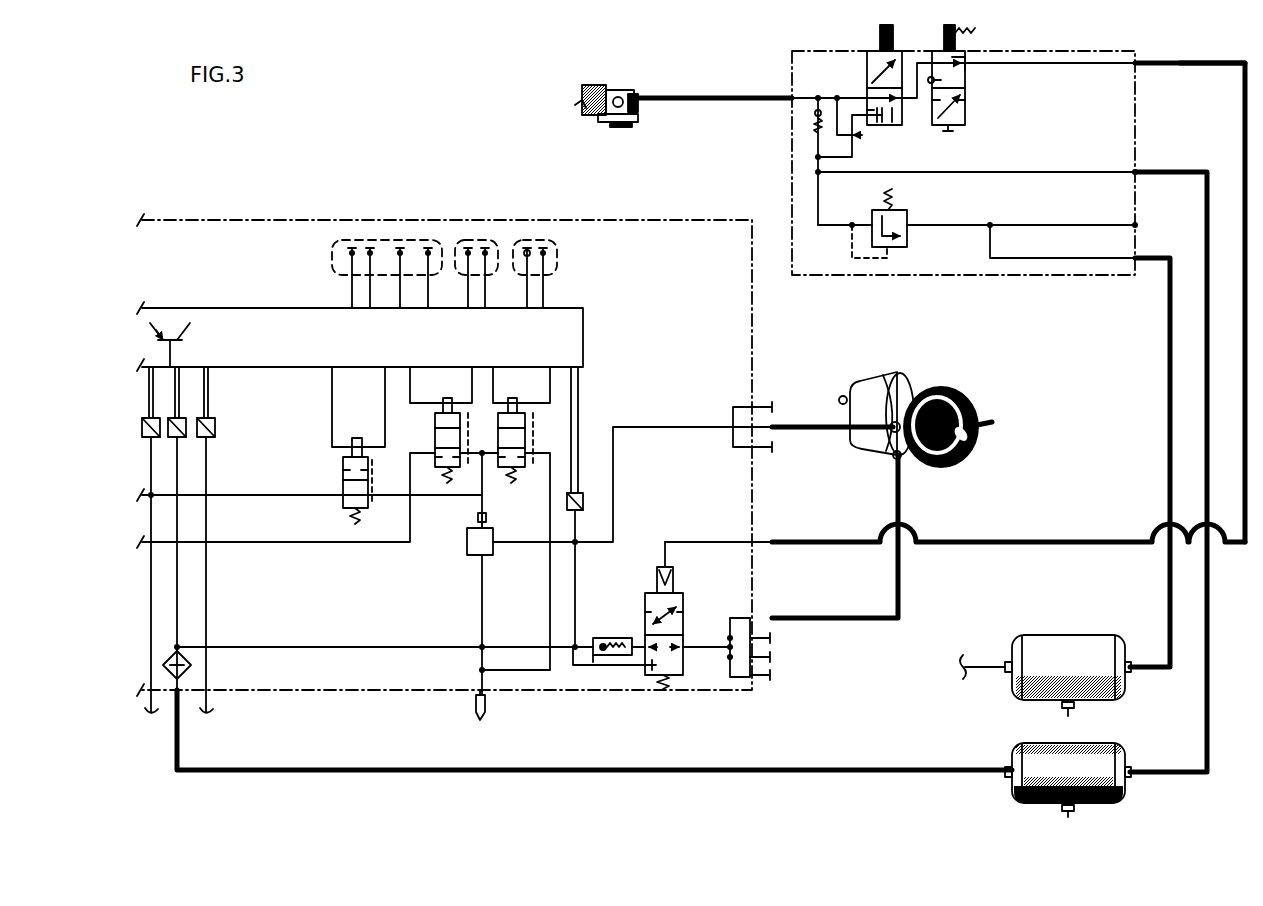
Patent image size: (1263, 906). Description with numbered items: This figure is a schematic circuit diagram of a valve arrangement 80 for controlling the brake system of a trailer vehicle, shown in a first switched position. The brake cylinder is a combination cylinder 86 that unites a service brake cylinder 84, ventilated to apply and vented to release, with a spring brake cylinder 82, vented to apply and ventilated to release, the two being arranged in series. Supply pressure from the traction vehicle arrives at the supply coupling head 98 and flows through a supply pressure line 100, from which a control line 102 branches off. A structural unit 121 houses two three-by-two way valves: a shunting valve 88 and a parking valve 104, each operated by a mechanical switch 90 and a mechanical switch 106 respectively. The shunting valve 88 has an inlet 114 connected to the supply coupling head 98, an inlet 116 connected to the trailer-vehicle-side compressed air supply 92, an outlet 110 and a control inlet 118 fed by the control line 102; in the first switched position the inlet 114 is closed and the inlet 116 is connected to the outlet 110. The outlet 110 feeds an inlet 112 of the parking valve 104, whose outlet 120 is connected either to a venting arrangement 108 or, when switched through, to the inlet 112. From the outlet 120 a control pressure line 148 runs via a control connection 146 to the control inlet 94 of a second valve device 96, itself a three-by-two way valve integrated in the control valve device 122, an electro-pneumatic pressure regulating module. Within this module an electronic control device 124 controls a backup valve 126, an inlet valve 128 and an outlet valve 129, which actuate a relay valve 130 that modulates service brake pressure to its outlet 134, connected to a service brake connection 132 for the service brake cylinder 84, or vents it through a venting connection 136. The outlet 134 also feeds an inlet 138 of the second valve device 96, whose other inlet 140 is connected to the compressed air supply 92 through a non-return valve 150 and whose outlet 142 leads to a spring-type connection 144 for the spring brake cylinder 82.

The valve arrangement 80 is at (1172, 55).
The spring brake cylinder 82 is at (884, 382).
The service brake cylinder 84 is at (977, 419).
The combination cylinder 86 is at (944, 378).
The shunting valve 88 is at (898, 201).
The mechanical switch 90 is at (882, 50).
The trailer-vehicle-side compressed air supply 92 is at (1035, 760).
The control inlet 94 is at (667, 566).
The second valve device 96 is at (635, 619).
The supply coupling head 98 is at (574, 96).
The supply pressure line 100 is at (755, 97).
The control line 102 is at (867, 113).
The parking valve 104 is at (952, 131).
The mechanical switch 106 is at (967, 30).
The venting arrangement 108 is at (930, 84).
The outlet 110 is at (890, 126).
The inlet 112 is at (940, 66).
The inlet 114 is at (867, 118).
The inlet 116 is at (867, 105).
The control inlet 118 is at (884, 126).
The outlet 120 is at (966, 68).
The structural unit 121 is at (1105, 53).
The control valve device 122 is at (616, 221).
The electronic control device 124 is at (272, 322).
The backup valve 126 is at (345, 490).
The inlet valve 128 is at (436, 424).
The outlet valve 129 is at (526, 432).
The relay valve 130 is at (469, 548).
The service brake connection 132 is at (760, 427).
The outlet 134 is at (493, 541).
The venting connection 136 is at (474, 704).
The inlet 138 is at (646, 665).
The inlet 140 is at (646, 640).
The outlet 142 is at (684, 646).
The spring-type connection 144 is at (760, 618).
The control connection 146 is at (755, 542).
The control pressure line 148 is at (1191, 67).
The non-return valve 150 is at (598, 653).